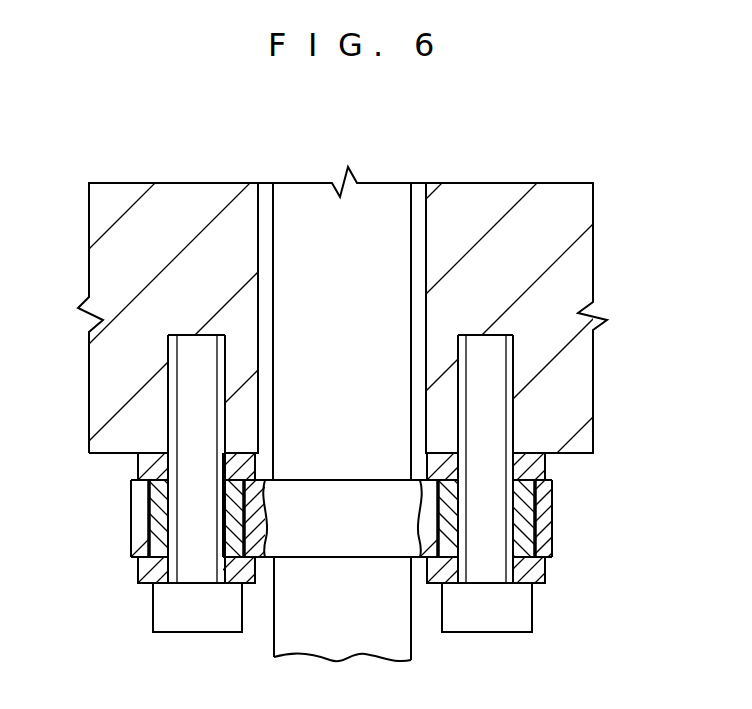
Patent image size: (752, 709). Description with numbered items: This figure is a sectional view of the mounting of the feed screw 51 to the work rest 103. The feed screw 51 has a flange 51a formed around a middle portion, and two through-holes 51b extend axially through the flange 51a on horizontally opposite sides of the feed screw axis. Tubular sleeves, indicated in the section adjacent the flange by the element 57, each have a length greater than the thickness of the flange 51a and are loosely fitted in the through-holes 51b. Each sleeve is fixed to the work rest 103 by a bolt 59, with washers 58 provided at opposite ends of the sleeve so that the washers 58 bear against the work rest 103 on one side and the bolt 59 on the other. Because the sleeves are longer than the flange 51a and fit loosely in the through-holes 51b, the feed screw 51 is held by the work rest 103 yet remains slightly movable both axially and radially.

The feed screw 51 is at (377, 190).
The flange 51a is at (549, 520).
The through-holes 51b is at (428, 560).
The spacer 57 is at (427, 505).
The washers 58 is at (540, 574).
The bolts 59 is at (527, 618).
The work rest 103 is at (578, 208).